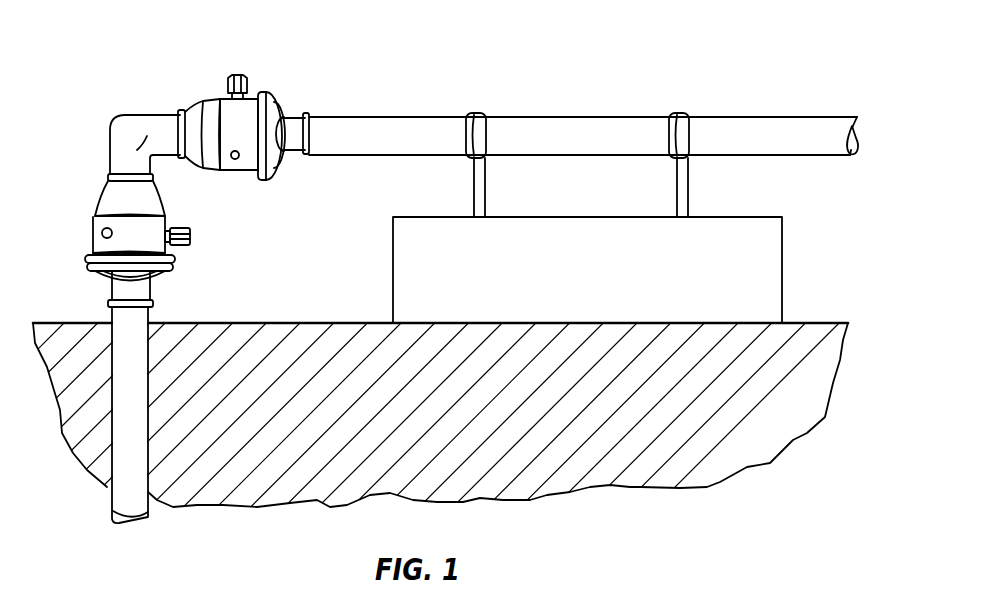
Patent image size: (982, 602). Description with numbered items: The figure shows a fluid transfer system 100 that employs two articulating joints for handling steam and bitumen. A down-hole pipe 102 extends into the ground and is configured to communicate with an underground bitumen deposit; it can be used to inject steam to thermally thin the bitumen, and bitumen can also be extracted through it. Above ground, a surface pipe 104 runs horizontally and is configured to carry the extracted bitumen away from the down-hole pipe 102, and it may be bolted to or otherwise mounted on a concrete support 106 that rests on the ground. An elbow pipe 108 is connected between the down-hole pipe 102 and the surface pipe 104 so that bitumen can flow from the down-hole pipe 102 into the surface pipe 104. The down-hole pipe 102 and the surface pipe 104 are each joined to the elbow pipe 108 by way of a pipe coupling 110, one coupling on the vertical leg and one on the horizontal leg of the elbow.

The fluid transfer system 100 is at (98, 101).
The down-hole pipe 102 is at (110, 504).
The surface pipe 104 is at (582, 126).
The concrete support 106 is at (758, 260).
The elbow pipe 108 is at (118, 119).
The pipe coupling 110 is at (257, 76).